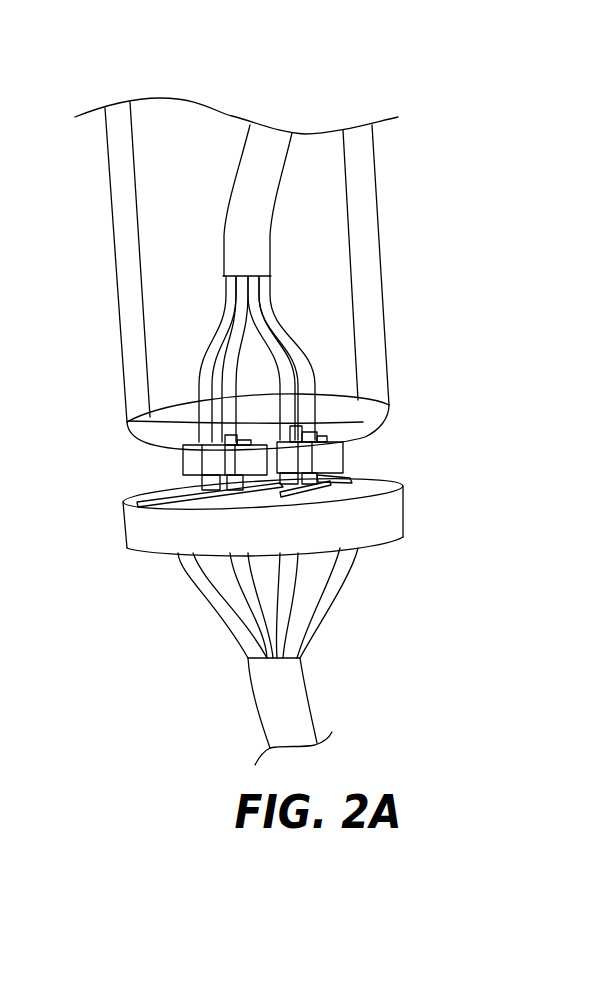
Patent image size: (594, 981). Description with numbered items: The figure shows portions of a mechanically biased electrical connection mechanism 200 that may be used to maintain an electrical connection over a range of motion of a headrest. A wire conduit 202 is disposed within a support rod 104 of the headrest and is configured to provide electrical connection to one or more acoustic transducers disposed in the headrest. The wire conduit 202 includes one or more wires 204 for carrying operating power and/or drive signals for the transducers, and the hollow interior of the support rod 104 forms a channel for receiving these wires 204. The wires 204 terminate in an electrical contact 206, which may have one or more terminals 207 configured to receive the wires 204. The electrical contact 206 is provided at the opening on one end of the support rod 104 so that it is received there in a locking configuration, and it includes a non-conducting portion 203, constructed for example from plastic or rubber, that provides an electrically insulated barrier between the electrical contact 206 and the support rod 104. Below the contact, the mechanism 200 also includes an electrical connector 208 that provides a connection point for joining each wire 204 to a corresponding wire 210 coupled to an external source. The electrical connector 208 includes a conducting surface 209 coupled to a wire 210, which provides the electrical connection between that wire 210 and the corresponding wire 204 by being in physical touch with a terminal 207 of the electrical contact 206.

The mechanically biased electrical connection mechanism 200 is at (434, 73).
The wire conduit 202 is at (268, 183).
The support rod 104 is at (370, 268).
The wires 204 is at (203, 338).
The non-conducting portion 203 is at (333, 460).
The conducting surface 209 is at (163, 492).
The electrical contact 206 is at (380, 470).
The terminals 207 is at (337, 482).
The electrical connector 208 is at (137, 527).
The wire 210 is at (232, 608).